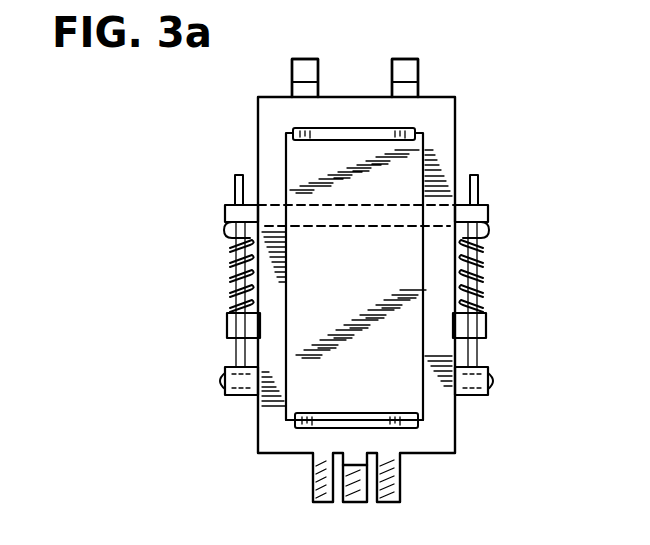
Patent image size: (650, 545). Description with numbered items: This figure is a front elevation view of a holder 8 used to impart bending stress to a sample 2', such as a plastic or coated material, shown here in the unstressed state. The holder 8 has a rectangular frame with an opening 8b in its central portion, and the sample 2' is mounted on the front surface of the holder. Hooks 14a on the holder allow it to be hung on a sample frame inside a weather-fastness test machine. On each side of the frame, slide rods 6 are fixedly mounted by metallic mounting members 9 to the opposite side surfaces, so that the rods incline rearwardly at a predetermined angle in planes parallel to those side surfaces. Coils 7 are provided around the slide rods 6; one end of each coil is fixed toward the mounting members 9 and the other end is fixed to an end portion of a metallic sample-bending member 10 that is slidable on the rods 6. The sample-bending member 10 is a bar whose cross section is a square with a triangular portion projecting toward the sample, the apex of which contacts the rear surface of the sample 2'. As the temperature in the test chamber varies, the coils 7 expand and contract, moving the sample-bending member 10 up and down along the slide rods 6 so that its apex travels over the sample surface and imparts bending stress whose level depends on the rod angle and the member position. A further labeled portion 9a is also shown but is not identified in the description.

The sample 2' is at (390, 260).
The slide rods 6 is at (478, 185).
The coils 7 is at (483, 247).
The holder 8 is at (455, 443).
The opening 8b is at (425, 411).
The metallic mounting members 9 is at (490, 392).
The housing interior chamber 9a is at (268, 420).
The metallic sample-bending member 10 is at (226, 207).
The hooks 14a is at (392, 70).